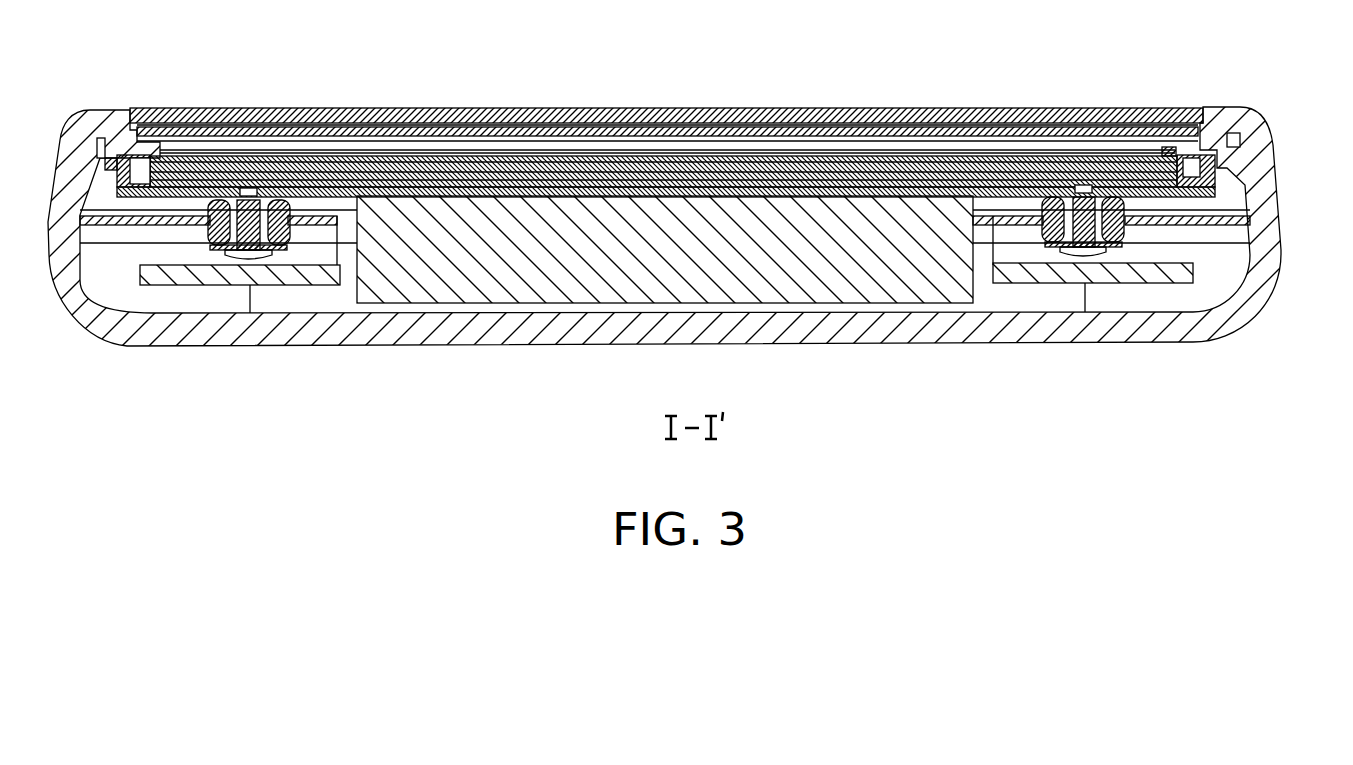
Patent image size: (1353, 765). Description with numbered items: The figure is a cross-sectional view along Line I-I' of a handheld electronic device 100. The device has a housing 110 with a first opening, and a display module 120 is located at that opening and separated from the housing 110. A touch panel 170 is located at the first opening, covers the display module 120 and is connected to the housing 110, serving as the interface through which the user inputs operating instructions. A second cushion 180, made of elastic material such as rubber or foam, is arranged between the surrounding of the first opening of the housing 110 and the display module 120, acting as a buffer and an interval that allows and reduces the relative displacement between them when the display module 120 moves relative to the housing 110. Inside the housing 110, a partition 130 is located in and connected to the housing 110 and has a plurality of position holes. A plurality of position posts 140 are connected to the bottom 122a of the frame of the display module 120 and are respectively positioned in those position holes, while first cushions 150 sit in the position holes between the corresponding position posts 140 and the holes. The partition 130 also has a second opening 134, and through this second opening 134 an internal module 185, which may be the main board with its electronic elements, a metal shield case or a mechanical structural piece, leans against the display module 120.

The handheld electronic device 100 is at (691, 228).
The housing 110 is at (1258, 142).
The display module 120 is at (1213, 178).
The bottom of the frame 122a is at (305, 193).
The partition 130 is at (1227, 218).
The second opening 134 is at (348, 222).
The position posts 140 is at (1103, 228).
The first cushions 150 is at (1120, 233).
The touch panel 170 is at (946, 110).
The second cushion 180 is at (1170, 150).
The internal module 185 is at (858, 268).